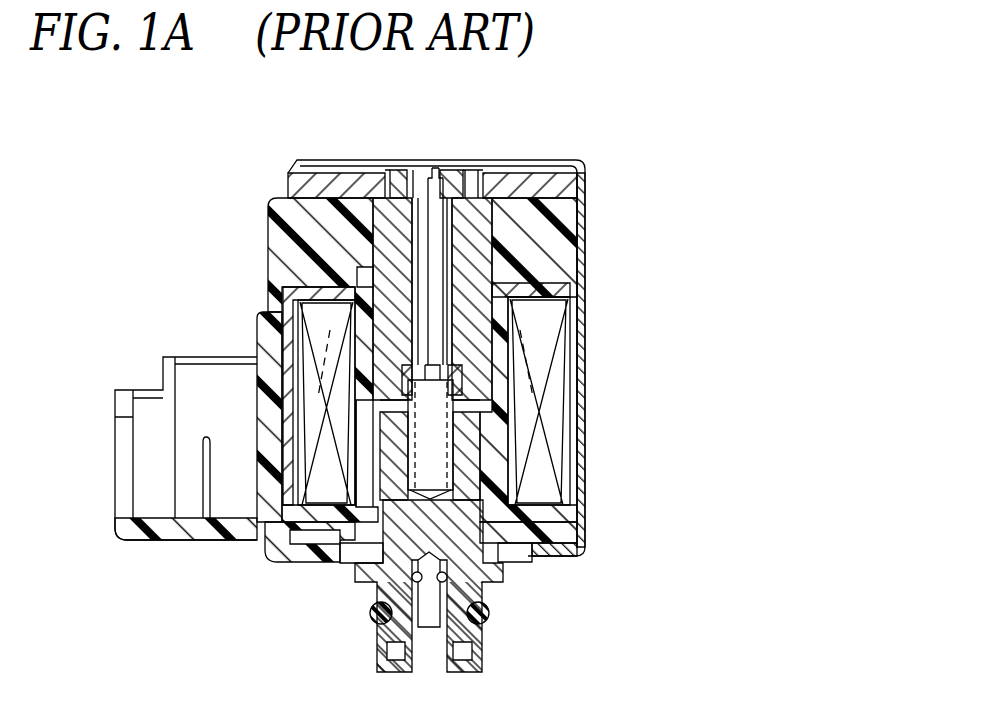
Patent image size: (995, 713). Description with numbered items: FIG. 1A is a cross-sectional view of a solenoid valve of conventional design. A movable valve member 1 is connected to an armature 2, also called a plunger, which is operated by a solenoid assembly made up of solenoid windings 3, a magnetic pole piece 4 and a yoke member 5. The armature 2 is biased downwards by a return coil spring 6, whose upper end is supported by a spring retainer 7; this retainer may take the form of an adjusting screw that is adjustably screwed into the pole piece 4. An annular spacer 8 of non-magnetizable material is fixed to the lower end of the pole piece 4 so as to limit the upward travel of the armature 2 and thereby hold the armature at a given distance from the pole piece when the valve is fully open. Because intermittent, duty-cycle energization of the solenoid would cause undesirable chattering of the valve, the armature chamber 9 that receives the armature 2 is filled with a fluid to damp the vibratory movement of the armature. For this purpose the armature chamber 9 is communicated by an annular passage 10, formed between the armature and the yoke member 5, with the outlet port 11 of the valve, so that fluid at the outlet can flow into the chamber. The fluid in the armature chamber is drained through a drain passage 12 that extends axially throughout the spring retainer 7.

The movable valve member 1 is at (492, 572).
The armature 2 is at (460, 455).
The solenoid windings 3 is at (257, 448).
The magnetic pole piece 4 is at (497, 233).
The yoke member 5 is at (535, 469).
The return coil spring 6 is at (458, 410).
The spring retainer 7 is at (455, 187).
The annular spacer 8 is at (458, 340).
The armature chamber 9 is at (432, 413).
The annular passage 10 is at (280, 538).
The outlet port 11 is at (352, 560).
The drain passage 12 is at (437, 187).